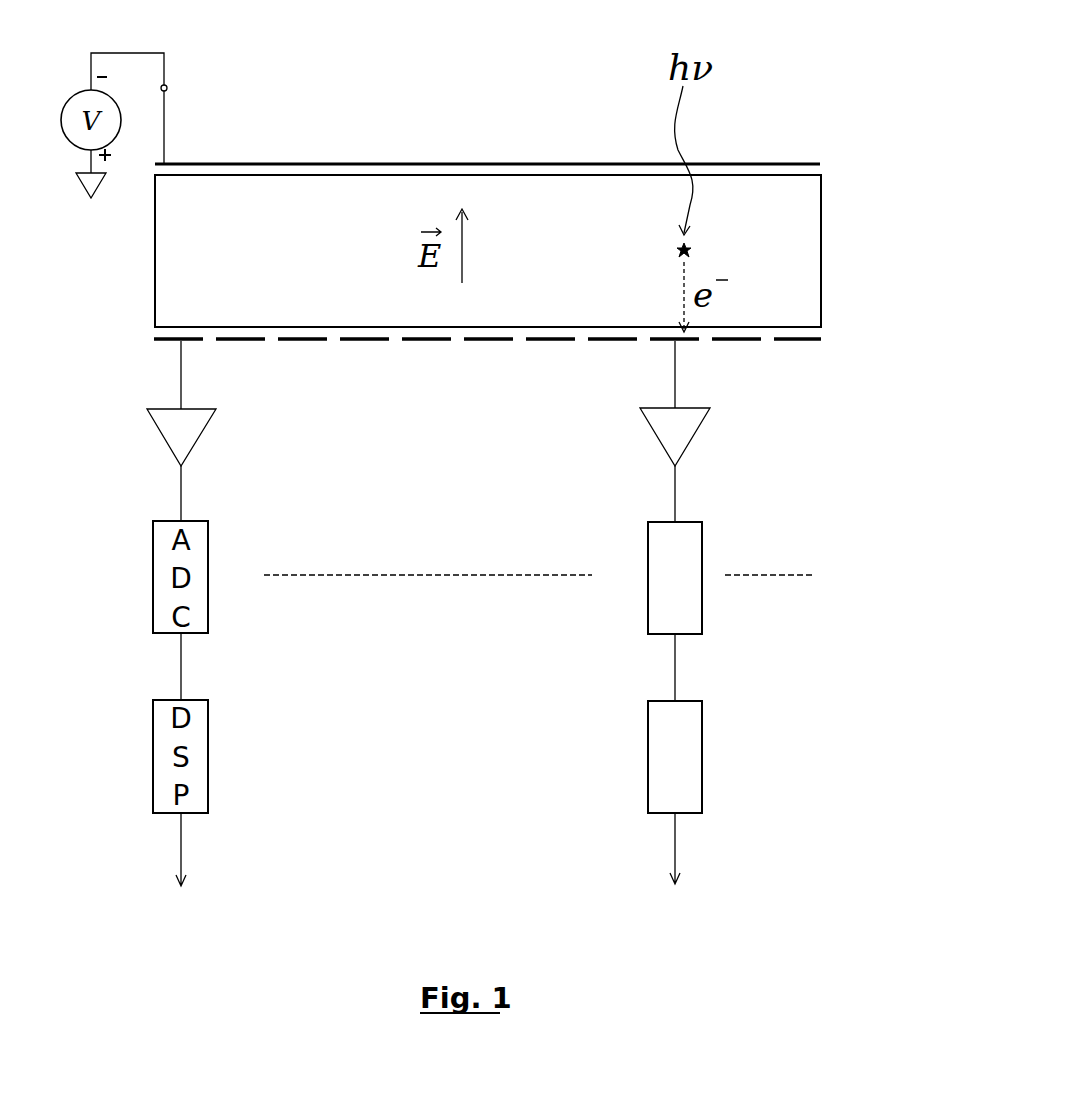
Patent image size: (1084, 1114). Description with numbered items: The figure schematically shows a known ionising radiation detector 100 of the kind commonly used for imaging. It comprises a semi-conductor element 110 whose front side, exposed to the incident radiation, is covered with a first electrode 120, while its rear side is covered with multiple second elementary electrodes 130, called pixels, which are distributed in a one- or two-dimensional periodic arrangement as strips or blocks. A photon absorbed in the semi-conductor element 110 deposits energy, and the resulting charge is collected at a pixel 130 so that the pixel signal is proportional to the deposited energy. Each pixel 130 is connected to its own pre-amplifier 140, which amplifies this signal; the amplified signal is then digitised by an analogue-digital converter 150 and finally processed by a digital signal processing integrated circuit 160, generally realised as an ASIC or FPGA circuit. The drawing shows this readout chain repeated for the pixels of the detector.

The detector 100 is at (398, 96).
The semi-conductor element 110 is at (800, 297).
The first electrode 120 is at (800, 162).
The second elementary electrode 130 is at (693, 343).
The pre-amplifier 140 is at (692, 443).
The analogue-digital converter 150 is at (702, 594).
The digital signal processing integrated circuit 160 is at (702, 740).